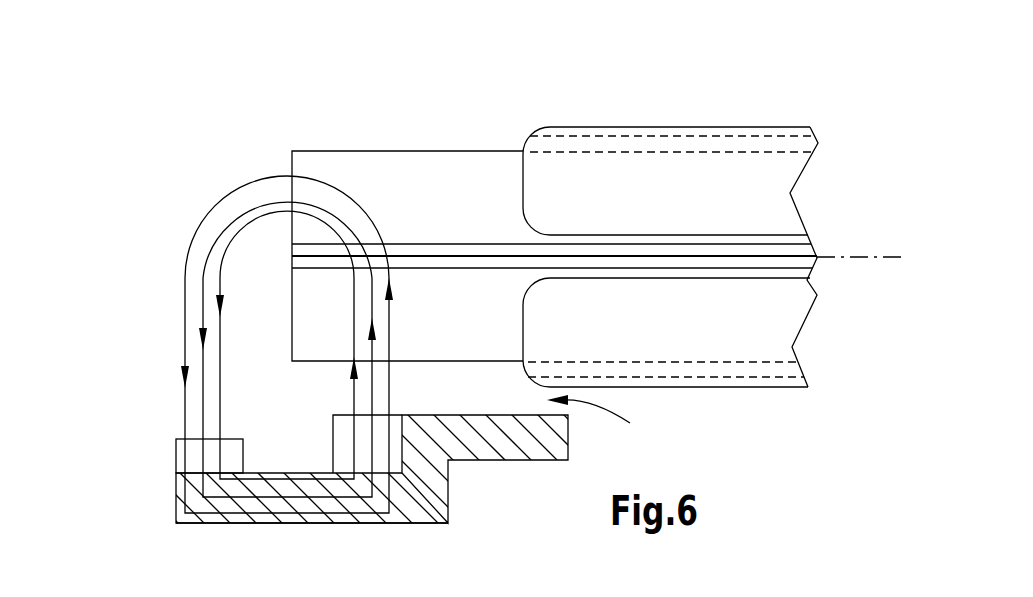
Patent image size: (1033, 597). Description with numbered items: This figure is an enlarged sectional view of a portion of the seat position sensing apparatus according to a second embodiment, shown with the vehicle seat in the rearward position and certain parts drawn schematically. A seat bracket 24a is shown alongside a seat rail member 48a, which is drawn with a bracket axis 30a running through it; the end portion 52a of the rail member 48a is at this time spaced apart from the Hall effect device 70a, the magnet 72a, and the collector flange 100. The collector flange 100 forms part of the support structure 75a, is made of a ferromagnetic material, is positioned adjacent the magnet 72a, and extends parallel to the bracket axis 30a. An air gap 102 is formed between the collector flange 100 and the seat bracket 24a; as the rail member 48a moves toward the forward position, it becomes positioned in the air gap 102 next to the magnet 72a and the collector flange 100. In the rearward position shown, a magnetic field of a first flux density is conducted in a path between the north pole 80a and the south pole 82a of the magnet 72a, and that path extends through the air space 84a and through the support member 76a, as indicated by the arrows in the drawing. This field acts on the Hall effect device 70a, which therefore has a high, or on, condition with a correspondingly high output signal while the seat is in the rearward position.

The seat bracket 24a is at (417, 177).
The seat rail member 48a is at (645, 127).
The end portion 52a is at (568, 188).
The bracket axis 30a is at (852, 258).
The air space 84a is at (145, 342).
The collector flange 100 is at (490, 450).
The support member 76a is at (250, 523).
The support structure 75a is at (312, 521).
The Hall effect device 70a is at (175, 445).
The north pole 80a is at (342, 418).
The magnet 72a is at (338, 440).
The south pole 82a is at (340, 465).
The air gap 102 is at (602, 422).